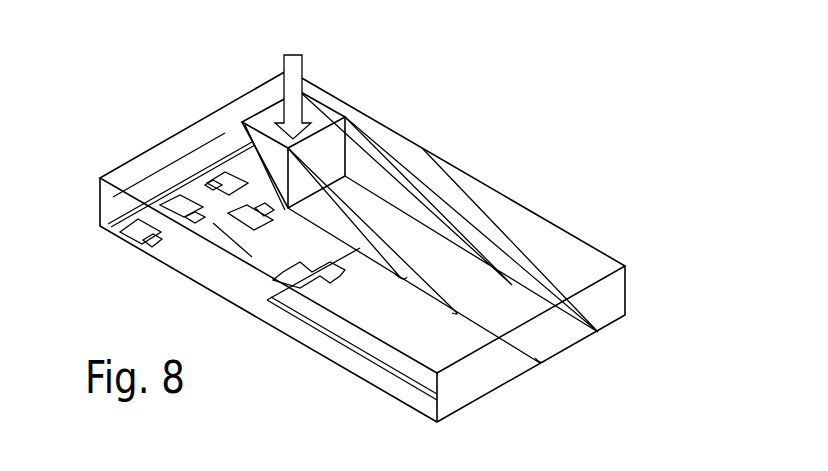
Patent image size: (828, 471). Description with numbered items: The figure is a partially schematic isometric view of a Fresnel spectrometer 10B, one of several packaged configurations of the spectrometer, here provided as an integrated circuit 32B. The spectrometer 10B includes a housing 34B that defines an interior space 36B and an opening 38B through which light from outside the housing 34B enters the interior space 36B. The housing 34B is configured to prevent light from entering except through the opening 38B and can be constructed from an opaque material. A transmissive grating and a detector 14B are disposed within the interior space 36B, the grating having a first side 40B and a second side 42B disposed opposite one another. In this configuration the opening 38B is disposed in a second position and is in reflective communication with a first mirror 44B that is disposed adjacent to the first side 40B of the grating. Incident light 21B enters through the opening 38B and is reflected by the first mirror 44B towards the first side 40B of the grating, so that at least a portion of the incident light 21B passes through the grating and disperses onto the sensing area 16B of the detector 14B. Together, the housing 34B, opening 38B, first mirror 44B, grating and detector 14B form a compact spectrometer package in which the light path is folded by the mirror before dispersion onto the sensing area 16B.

The Fresnel spectrometer 10B is at (223, 80).
The detector 14B is at (310, 342).
The sensing area 16B is at (435, 250).
The incident light 21B is at (290, 70).
The integrated circuit 32B is at (183, 258).
The housing 34B is at (525, 206).
The interior space 36B is at (144, 186).
The opening 38B is at (322, 113).
The first side 40B is at (321, 128).
The second side 42B is at (317, 160).
The first mirror 44B is at (248, 162).